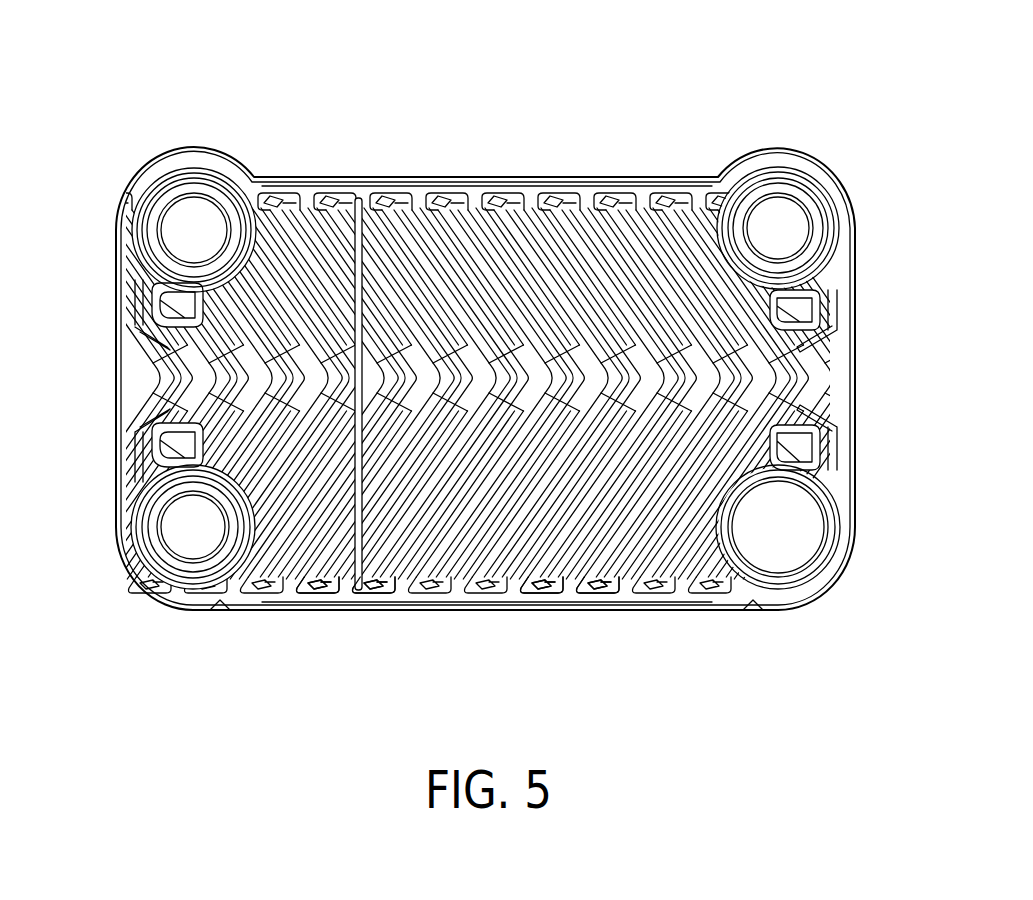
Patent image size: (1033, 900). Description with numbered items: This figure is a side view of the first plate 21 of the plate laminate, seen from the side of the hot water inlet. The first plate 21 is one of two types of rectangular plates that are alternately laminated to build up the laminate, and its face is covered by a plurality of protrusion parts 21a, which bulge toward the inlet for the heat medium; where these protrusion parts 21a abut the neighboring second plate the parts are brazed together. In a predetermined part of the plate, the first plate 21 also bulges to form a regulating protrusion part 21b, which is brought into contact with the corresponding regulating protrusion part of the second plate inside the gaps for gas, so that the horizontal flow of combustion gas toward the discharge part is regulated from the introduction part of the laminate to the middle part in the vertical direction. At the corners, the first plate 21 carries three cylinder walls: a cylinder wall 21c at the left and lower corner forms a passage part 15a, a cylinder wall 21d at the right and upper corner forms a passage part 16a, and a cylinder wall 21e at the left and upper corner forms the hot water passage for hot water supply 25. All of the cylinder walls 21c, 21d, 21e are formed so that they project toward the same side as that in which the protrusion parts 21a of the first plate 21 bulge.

The first plate 21 is at (292, 96).
The protrusion parts 21a is at (313, 586).
The regulating protrusion part 21b is at (357, 257).
The cylinder wall 21c is at (207, 560).
The cylinder wall 21d is at (813, 227).
The cylinder wall 21e is at (160, 230).
The hot water passage for hot water supply 25 is at (195, 211).
The passage part 16a is at (778, 212).
The passage part 15a is at (188, 530).